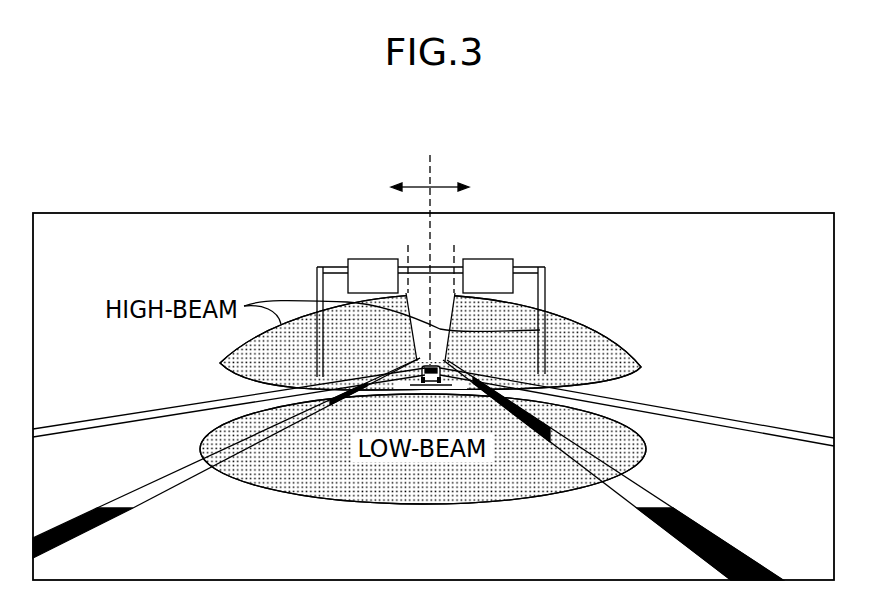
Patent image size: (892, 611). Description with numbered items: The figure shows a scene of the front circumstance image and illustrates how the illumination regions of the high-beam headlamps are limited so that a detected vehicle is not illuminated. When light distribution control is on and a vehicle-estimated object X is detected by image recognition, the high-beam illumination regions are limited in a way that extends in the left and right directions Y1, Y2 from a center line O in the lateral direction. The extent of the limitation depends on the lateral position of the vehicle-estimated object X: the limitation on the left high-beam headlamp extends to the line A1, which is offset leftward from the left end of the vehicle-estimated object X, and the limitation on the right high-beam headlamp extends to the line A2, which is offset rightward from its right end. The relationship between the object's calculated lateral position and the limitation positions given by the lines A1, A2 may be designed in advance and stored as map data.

The center line O is at (429, 246).
The left direction Y1 is at (395, 187).
The right direction Y2 is at (465, 187).
The line A1 is at (406, 256).
The line A2 is at (452, 256).
The vehicle-estimated object X is at (540, 330).